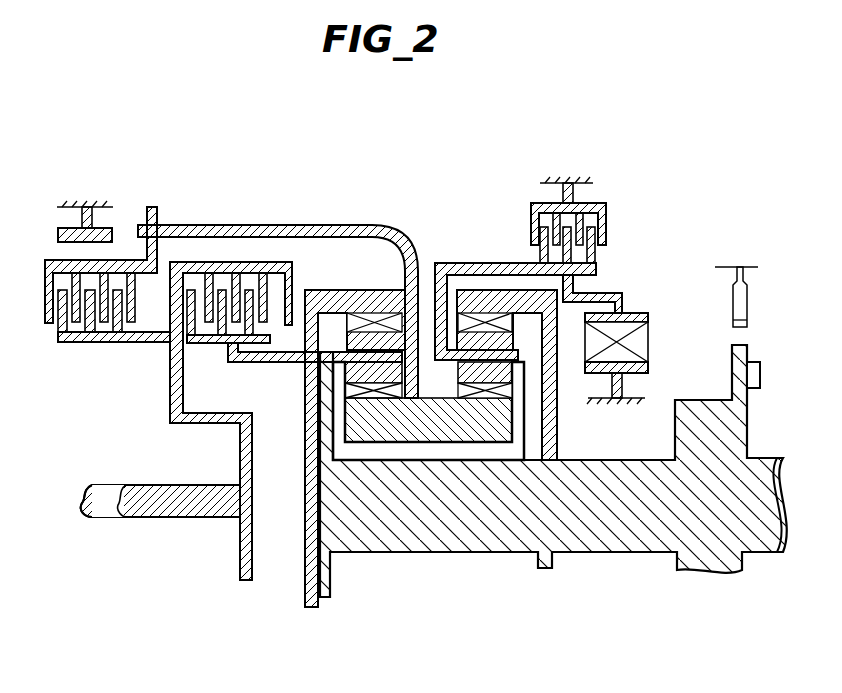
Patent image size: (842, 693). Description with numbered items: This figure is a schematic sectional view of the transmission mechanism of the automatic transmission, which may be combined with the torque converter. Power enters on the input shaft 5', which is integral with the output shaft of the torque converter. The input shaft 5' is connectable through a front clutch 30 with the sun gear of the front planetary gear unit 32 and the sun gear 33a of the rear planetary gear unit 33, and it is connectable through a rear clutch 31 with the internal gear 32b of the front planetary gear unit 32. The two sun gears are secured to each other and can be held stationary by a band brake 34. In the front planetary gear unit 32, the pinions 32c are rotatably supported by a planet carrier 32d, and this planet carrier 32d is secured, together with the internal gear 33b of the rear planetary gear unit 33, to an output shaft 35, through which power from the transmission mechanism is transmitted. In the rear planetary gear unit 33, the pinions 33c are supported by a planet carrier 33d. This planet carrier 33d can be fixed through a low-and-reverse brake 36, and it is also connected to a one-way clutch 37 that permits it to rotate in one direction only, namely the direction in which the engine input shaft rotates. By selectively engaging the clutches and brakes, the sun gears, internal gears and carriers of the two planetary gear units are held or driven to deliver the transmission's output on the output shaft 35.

The front clutch 30 is at (48, 255).
The band brake 34 is at (113, 228).
The rear clutch 31 is at (253, 257).
The front planetary gear unit 32 is at (342, 384).
The internal gear 32b is at (318, 287).
The pinions 32c is at (372, 302).
The planet carrier 32d is at (327, 440).
The rear planetary gear unit 33 is at (476, 303).
The sun gear 33a is at (367, 407).
The internal gear 33b is at (488, 290).
The pinions 33c is at (455, 325).
The planet carrier 33d is at (452, 262).
The low-and-reverse brake 36 is at (598, 206).
The one-way clutch 37 is at (628, 330).
The input shaft 5' is at (160, 481).
The output shaft 35 is at (768, 543).